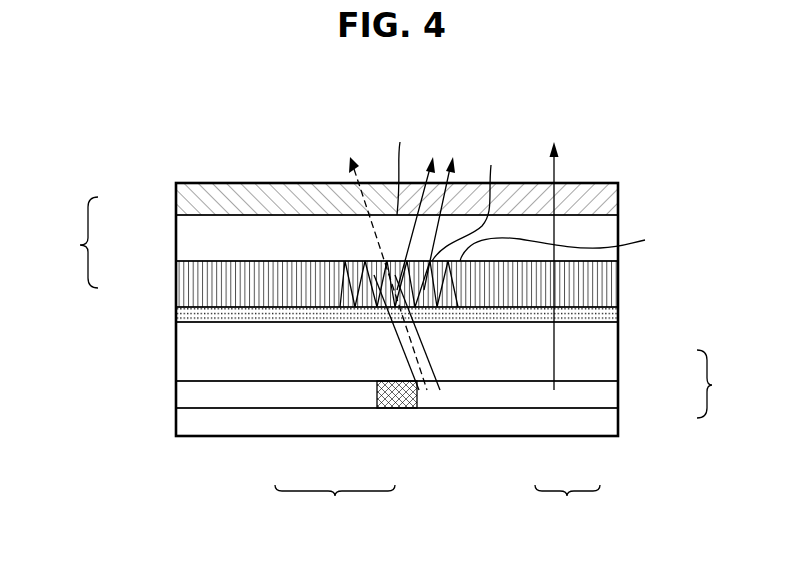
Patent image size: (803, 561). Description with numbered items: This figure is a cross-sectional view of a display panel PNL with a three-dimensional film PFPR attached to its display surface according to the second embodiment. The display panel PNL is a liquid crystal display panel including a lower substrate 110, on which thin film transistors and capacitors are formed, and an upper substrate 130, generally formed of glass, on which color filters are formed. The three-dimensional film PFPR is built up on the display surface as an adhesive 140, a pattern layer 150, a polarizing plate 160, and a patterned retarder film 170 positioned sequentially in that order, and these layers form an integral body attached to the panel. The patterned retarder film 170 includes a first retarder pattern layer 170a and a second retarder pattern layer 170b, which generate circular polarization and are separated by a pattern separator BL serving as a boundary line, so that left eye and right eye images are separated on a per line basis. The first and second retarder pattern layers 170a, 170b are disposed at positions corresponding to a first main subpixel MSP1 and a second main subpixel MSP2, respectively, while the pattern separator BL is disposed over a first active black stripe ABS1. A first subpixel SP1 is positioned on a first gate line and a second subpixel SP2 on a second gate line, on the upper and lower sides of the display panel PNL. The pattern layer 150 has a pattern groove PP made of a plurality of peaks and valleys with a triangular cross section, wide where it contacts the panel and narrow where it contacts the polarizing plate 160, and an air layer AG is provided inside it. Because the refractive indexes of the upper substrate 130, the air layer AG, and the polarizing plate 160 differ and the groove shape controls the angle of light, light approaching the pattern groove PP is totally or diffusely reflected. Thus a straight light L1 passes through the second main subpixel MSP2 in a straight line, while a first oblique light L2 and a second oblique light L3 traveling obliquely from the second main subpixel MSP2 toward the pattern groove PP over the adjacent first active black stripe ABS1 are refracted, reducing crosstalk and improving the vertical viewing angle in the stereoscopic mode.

The lower substrate 110 is at (618, 418).
The upper substrate 130 is at (618, 350).
The adhesive 140 is at (618, 312).
The pattern layer 150 is at (176, 287).
The polarizing plate 160 is at (176, 240).
The patterned retarder film 170 is at (176, 197).
The first retarder pattern layer 170a is at (233, 190).
The second retarder pattern layer 170b is at (612, 197).
The pattern separator BL is at (400, 167).
The straight light L1 is at (555, 253).
The first oblique light L2 is at (420, 262).
The second oblique light L3 is at (382, 262).
The air layer AG is at (470, 201).
The pattern groove PP is at (567, 246).
The 3D film PFPR is at (60, 242).
The display panel PNL is at (726, 384).
The first main subpixel MSP1 is at (279, 398).
The second main subpixel MSP2 is at (570, 398).
The first active black stripe ABS1 is at (397, 398).
The first subpixel SP1 is at (335, 505).
The second subpixel SP2 is at (567, 505).